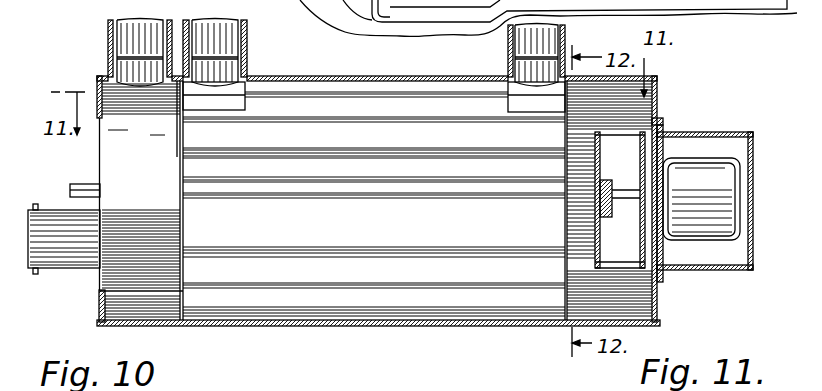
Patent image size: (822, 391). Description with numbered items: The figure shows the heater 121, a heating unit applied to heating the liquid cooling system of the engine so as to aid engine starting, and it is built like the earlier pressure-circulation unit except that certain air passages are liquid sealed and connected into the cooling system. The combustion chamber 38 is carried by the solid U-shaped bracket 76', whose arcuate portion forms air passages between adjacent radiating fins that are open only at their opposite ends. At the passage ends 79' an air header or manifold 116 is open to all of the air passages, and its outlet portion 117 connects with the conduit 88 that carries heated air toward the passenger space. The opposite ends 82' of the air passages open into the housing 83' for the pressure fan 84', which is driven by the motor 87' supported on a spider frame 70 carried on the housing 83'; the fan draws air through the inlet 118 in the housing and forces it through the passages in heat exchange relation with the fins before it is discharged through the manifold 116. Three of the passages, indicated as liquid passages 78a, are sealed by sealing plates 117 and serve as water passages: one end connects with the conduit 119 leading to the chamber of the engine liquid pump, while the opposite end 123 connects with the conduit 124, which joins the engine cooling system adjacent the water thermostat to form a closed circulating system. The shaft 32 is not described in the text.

The shaft 32 is at (62, 260).
The combustion chamber 38 is at (349, 117).
The spider frame 70 is at (745, 272).
The U-shaped bracket 76' is at (378, 341).
The liquid passages 78a is at (418, 93).
The passage ends 79' is at (210, 223).
The ends of the air passages 82' is at (589, 221).
The fan housing 83' is at (682, 193).
The pressure fan 84' is at (672, 117).
The driving motor 87' is at (711, 190).
The conduit 88 is at (138, 25).
The air header or manifold 116 is at (115, 323).
The outlet portion 117 is at (118, 62).
The inlet 118 is at (660, 252).
The conduit 119 is at (566, 42).
The heater 121 is at (357, 322).
The opposite end of the water passages 123 is at (411, 380).
The conduit 124 is at (232, 46).